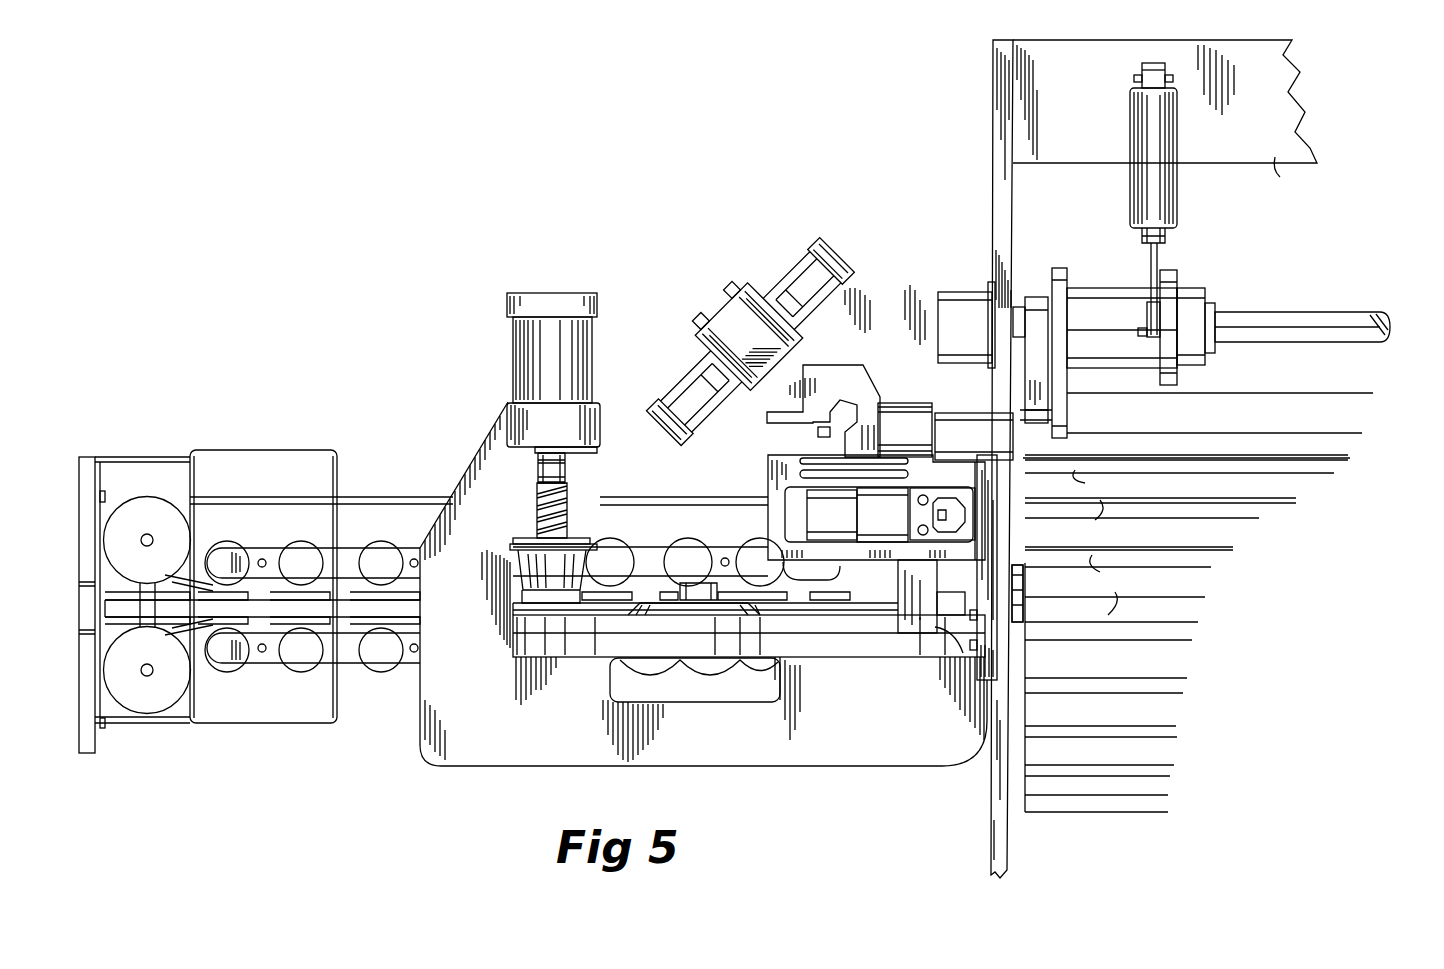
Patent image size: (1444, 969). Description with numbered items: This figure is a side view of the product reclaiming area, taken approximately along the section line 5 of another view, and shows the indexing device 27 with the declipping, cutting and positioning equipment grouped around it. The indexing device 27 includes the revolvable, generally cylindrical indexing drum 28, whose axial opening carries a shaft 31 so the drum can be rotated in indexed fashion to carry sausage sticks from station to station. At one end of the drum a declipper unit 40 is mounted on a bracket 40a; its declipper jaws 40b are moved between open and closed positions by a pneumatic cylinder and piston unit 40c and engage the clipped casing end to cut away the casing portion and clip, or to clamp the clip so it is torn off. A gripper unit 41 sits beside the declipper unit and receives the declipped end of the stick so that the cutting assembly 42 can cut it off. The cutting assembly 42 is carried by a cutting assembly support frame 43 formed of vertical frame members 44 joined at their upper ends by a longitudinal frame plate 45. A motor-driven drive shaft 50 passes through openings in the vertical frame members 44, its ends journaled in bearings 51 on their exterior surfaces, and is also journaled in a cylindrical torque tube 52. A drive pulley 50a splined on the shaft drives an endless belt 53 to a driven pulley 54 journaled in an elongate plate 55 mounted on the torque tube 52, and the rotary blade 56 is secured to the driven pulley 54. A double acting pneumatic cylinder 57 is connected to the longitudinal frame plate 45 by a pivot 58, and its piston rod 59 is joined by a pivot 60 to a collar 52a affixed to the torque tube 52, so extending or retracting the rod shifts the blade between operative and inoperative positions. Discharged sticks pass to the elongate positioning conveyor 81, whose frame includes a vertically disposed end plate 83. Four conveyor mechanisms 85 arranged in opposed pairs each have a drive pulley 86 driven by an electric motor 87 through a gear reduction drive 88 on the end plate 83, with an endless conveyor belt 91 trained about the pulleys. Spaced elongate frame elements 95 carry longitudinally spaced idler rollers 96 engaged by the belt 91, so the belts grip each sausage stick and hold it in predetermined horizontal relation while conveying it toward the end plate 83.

The section line 5 is at (1095, 542).
The indexing device 27 is at (1052, 838).
The indexing drum 28 is at (1140, 822).
The shaft 31 is at (1017, 618).
The declipper unit 40 is at (873, 538).
The bracket 40a is at (780, 520).
The declipper jaws 40b is at (972, 520).
The pneumatic cylinder and piston unit 40c is at (790, 500).
The gripper unit 41 is at (748, 400).
The cutting assembly 42 is at (1300, 228).
The cutting assembly support frame 43 is at (1320, 85).
The vertical frame members 44 is at (993, 75).
The longitudinal frame plate 45 is at (1292, 182).
The drive shaft 50 is at (1343, 324).
The drive pulley 50a is at (1028, 305).
The bearings 51 is at (955, 300).
The torque tube 52 is at (1185, 292).
The collar 52a is at (1172, 278).
The endless belt 53 is at (1030, 395).
The driven pulley 54 is at (1045, 432).
The elongate plate 55 is at (1062, 418).
The rotary blade 56 is at (1040, 381).
The double acting pneumatic cylinder 57 is at (1165, 183).
The pivot 58 is at (1140, 77).
The piston rod 59 is at (1150, 265).
The pivot 60 is at (1150, 332).
The positioning conveyor 81 is at (376, 455).
The end plate 83 is at (87, 757).
The conveyor mechanisms 85 is at (410, 540).
The drive pulley 86 is at (127, 498).
The electric motor 87 is at (297, 458).
The gear reduction drive 88 is at (172, 457).
The endless conveyor belt 91 is at (105, 606).
The frame elements 95 is at (343, 560).
The idler rollers 96 is at (286, 546).